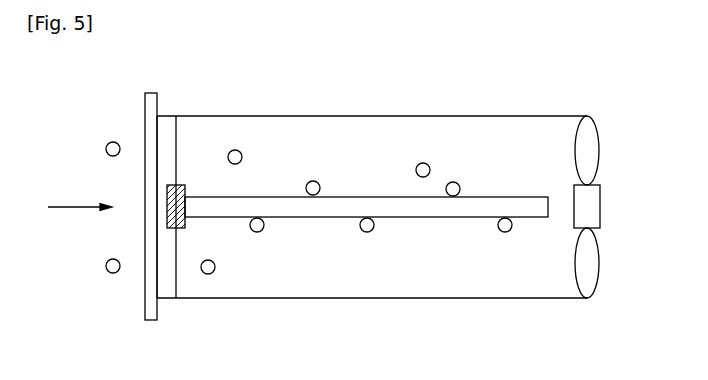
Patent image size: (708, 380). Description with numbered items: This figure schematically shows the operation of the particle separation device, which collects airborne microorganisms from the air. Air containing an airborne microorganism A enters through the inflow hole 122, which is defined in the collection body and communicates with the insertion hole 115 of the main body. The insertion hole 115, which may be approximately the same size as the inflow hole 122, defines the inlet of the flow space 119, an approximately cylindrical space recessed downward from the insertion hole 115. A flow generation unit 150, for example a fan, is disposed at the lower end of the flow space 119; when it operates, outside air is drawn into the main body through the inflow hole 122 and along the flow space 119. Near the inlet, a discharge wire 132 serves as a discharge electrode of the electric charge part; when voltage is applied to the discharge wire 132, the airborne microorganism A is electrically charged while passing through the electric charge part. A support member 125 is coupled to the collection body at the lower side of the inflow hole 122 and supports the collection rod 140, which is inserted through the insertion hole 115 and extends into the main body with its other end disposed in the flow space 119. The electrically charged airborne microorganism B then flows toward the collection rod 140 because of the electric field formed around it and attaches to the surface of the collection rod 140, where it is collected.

The discharge wire 132 is at (150, 119).
The inflow hole 122 is at (157, 270).
The flow space 119 is at (502, 148).
The insertion hole 115 is at (176, 143).
The collection rod 140 is at (383, 196).
The support member 125 is at (172, 218).
The flow generation unit 150 is at (590, 206).
The airborne microorganism A is at (113, 274).
The electrically charged airborne microorganism B is at (367, 232).